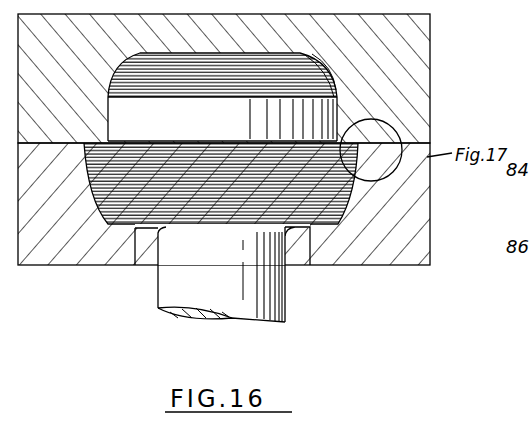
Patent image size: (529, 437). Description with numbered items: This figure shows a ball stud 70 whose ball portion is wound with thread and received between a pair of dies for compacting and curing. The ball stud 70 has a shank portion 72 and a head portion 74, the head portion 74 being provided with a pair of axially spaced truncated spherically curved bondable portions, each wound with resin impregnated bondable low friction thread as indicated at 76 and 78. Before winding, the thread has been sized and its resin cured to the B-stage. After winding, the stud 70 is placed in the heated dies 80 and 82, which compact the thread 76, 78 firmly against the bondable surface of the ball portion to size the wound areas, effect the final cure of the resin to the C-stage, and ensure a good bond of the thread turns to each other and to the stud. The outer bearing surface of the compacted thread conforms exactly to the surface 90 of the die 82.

The ball stud 70 is at (287, 305).
The shank portion 72 is at (167, 290).
The head portion 74 is at (322, 116).
The resin impregnated bondable low friction thread 76 is at (270, 77).
The resin impregnated bondable low friction thread 78 is at (353, 216).
The heated die 80 is at (417, 47).
The heated die 82 is at (395, 262).
The surface of the die 90 is at (350, 206).